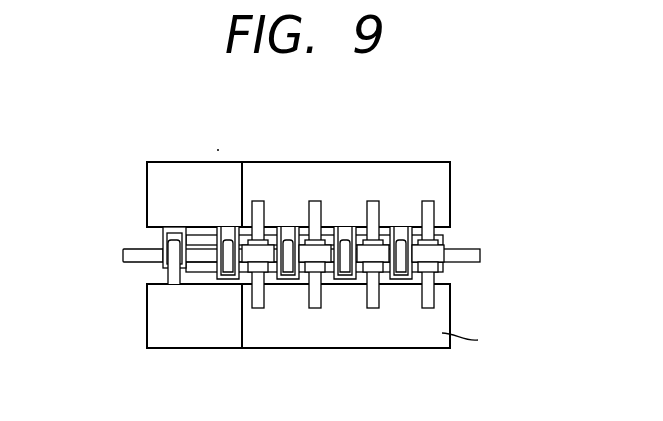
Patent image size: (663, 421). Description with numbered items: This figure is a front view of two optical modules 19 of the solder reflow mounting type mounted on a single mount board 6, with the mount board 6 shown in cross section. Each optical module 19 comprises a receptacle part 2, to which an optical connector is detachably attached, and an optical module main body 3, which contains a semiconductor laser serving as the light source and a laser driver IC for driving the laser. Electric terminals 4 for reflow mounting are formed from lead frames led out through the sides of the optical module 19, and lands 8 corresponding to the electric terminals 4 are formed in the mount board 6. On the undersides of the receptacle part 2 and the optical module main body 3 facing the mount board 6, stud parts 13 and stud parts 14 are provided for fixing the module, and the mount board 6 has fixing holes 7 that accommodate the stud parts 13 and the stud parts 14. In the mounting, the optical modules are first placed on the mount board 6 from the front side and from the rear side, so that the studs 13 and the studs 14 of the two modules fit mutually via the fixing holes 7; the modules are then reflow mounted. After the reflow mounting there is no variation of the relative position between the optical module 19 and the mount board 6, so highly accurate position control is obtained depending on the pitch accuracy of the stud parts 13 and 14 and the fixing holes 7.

The optical module 19 is at (248, 225).
The receptacle part 2 is at (178, 170).
The optical module main body 3 is at (163, 105).
The electric terminals 4 is at (430, 212).
The mount board 6 is at (480, 253).
The fixing holes 7 is at (167, 255).
The lands 8 is at (440, 245).
The stud parts 13 is at (165, 263).
The stud parts 14 is at (163, 232).